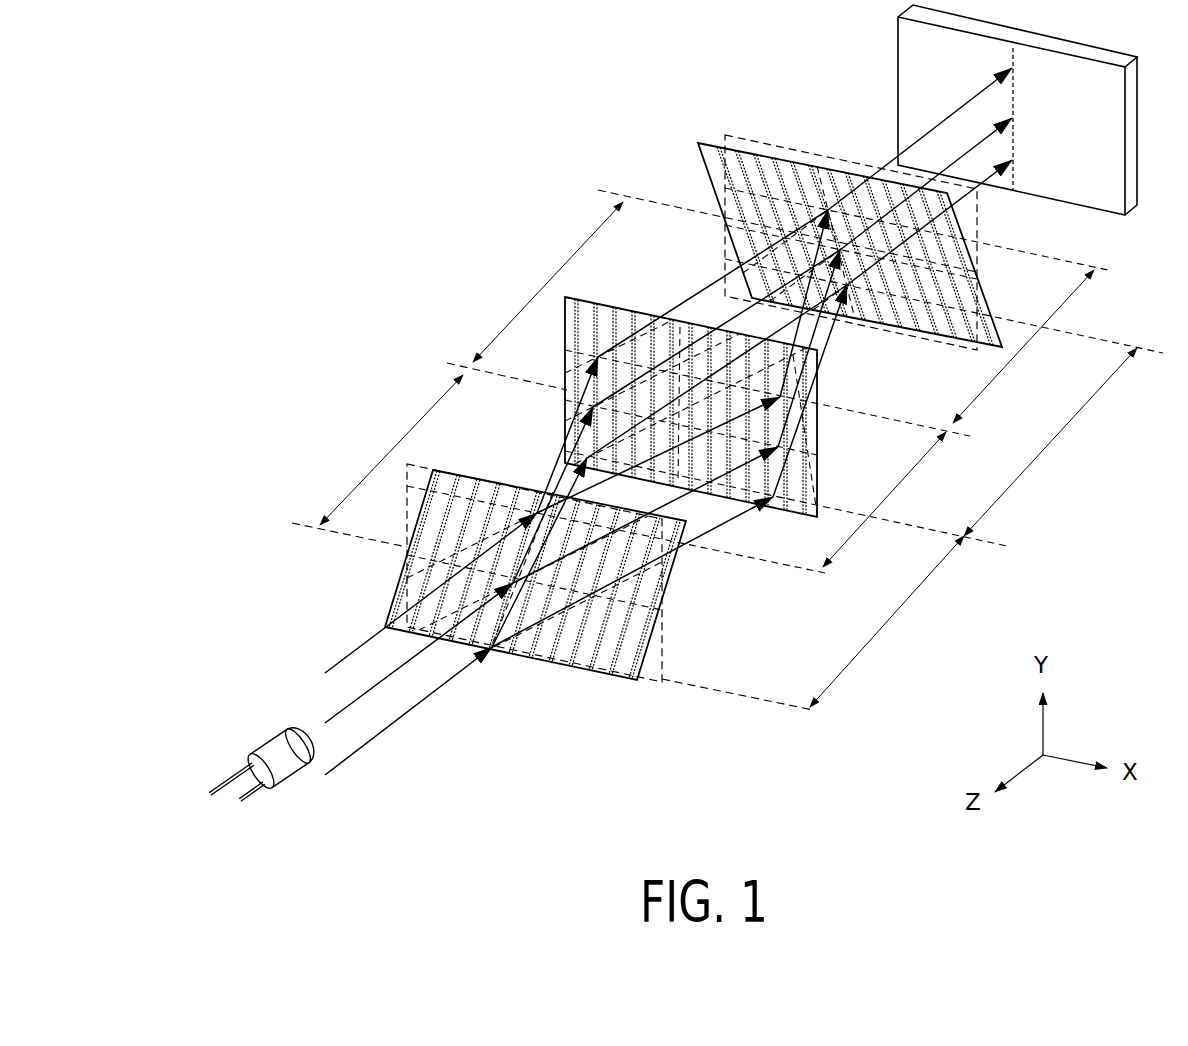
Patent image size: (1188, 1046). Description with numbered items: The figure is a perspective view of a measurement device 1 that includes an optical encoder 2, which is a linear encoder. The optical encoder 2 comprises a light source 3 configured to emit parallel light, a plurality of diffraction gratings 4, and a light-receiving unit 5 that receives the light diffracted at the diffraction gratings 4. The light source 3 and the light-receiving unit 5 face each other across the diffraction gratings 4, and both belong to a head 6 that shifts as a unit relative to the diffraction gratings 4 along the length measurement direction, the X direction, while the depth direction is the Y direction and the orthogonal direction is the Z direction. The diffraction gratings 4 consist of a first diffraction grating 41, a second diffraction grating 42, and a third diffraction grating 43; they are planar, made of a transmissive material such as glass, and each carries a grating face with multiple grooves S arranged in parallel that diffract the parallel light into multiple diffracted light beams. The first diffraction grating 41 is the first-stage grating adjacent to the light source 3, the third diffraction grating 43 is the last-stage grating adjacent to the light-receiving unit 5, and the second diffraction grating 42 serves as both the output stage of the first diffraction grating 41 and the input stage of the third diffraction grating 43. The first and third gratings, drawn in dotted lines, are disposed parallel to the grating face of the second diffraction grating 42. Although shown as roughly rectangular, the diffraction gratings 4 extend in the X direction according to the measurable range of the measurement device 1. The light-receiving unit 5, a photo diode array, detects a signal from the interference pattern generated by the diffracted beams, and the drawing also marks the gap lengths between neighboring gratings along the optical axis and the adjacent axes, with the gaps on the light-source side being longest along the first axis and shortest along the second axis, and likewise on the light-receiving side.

The measurement device 1 is at (400, 177).
The optical encoder 2 is at (633, 137).
The light source 3 is at (283, 780).
The diffraction gratings 4 is at (774, 388).
The light-receiving unit 5 is at (1135, 118).
The head 6 is at (698, 423).
The first diffraction grating 41 is at (673, 562).
The second diffraction grating 42 is at (818, 419).
The third diffraction grating 43 is at (968, 254).